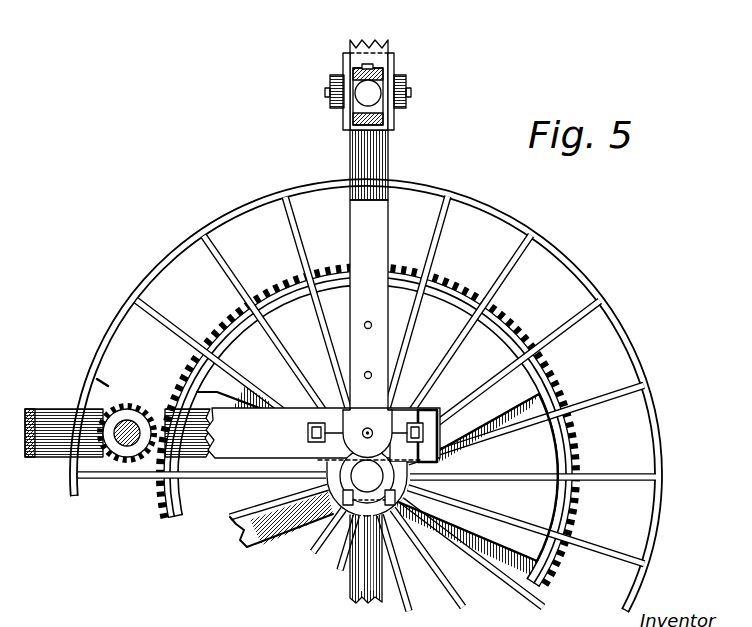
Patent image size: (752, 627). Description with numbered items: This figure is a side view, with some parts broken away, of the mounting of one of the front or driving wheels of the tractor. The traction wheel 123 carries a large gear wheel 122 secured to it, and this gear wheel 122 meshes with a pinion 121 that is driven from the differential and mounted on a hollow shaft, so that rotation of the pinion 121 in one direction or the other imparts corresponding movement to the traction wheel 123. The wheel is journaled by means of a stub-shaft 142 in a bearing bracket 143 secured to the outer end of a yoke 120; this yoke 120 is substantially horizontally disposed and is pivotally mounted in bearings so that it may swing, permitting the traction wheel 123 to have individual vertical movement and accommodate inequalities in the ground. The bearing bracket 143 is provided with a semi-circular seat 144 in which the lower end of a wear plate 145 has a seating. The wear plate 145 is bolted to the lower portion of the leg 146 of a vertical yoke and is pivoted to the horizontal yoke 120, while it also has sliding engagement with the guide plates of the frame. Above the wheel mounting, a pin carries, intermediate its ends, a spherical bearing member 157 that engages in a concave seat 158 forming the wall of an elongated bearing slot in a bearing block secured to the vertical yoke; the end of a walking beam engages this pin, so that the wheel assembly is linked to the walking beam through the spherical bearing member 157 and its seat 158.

The yoke 120 is at (323, 433).
The pinion 121 is at (120, 406).
The large gear wheel 122 is at (506, 326).
The traction wheel 123 is at (636, 362).
The stub-shaft 142 is at (432, 466).
The bearing bracket 143 is at (318, 449).
The semi-circular seat 144 is at (426, 410).
The wear plate 145 is at (395, 404).
The leg 146 is at (369, 226).
The spherical bearing member 157 is at (371, 72).
The concave seat 158 is at (392, 80).